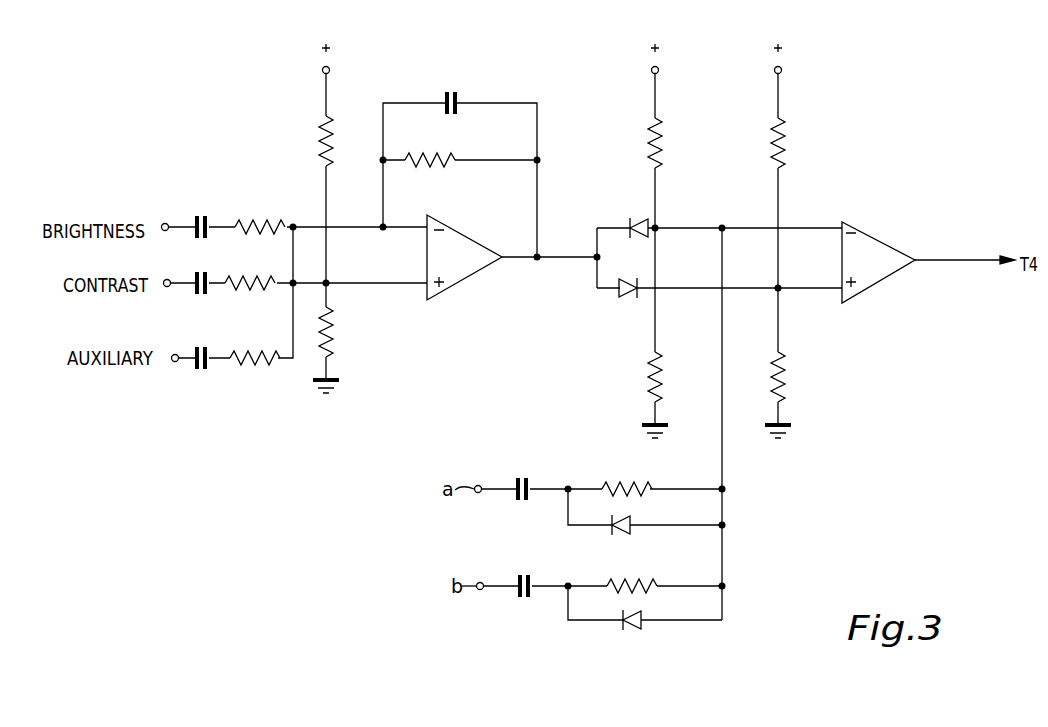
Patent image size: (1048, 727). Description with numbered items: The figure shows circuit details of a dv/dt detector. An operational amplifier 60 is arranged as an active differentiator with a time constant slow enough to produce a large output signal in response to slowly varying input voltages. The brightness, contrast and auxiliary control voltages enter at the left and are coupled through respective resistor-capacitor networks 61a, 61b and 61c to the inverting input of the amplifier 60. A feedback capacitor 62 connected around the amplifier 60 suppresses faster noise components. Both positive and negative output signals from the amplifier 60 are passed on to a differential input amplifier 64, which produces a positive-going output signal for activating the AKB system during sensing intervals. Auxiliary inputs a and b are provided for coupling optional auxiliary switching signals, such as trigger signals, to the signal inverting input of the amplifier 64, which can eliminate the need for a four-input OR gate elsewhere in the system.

The resistor-capacitor network 61a is at (263, 205).
The resistor-capacitor network 61b is at (263, 270).
The resistor-capacitor network 61c is at (271, 343).
The feedback capacitor 62 is at (449, 90).
The operational amplifier 60 is at (468, 270).
The differential input amplifier 64 is at (898, 225).